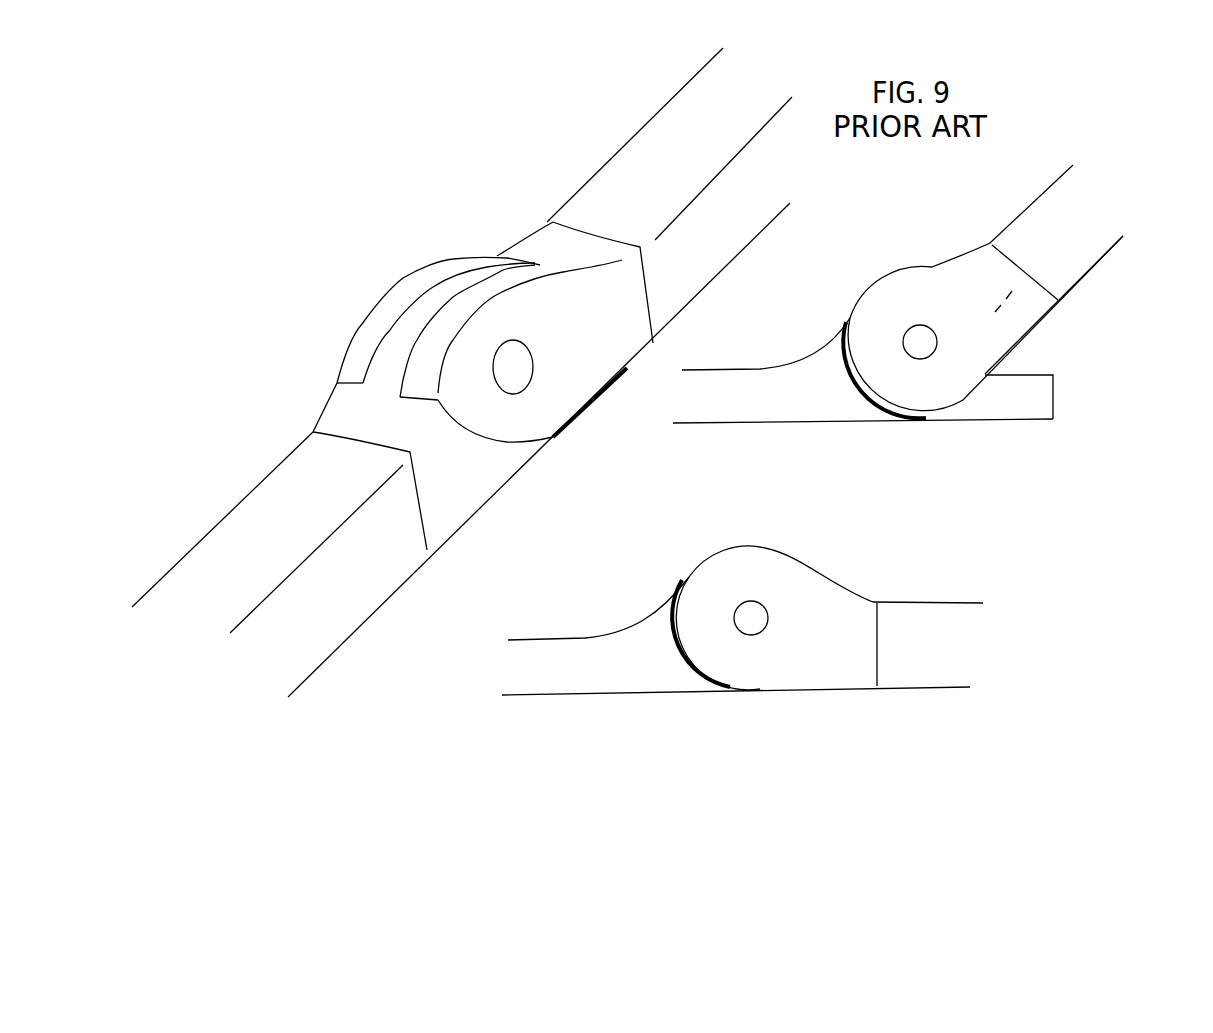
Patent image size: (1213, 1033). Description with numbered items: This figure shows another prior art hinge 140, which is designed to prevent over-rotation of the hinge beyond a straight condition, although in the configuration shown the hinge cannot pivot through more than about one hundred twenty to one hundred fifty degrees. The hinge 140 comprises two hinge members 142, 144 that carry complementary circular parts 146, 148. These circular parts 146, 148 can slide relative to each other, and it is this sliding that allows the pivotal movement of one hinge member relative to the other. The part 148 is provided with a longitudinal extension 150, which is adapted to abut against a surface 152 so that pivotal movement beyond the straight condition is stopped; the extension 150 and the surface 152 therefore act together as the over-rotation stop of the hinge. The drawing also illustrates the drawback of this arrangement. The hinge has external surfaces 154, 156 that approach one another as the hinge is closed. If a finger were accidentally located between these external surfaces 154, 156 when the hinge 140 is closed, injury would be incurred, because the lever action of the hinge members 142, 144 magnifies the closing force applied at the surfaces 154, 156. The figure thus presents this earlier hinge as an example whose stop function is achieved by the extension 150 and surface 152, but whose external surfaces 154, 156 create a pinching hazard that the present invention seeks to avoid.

The prior art hinge 140 is at (343, 243).
The hinge member 142 is at (553, 245).
The hinge member 144 is at (342, 413).
The circular part 146 is at (502, 290).
The circular part 148 is at (405, 340).
The longitudinal extension 150 is at (1027, 405).
The surface 152 is at (1013, 287).
The external surface 154 is at (1007, 377).
The external surface 156 is at (1043, 317).